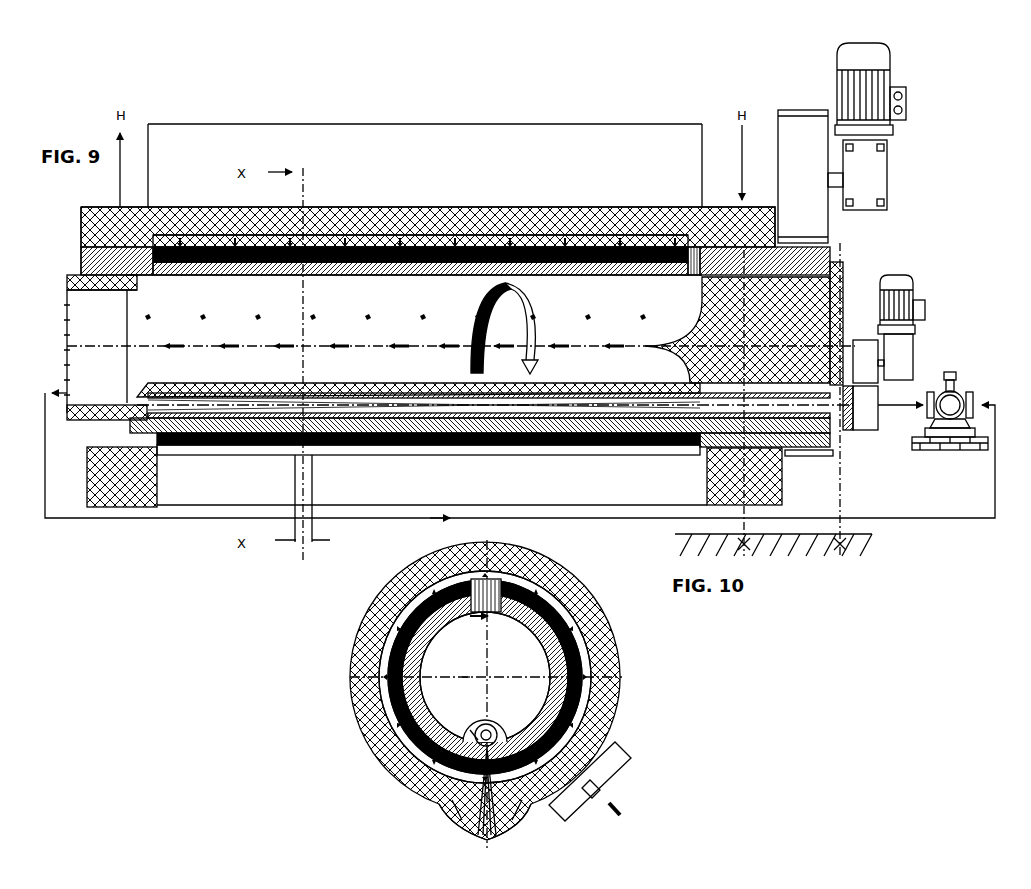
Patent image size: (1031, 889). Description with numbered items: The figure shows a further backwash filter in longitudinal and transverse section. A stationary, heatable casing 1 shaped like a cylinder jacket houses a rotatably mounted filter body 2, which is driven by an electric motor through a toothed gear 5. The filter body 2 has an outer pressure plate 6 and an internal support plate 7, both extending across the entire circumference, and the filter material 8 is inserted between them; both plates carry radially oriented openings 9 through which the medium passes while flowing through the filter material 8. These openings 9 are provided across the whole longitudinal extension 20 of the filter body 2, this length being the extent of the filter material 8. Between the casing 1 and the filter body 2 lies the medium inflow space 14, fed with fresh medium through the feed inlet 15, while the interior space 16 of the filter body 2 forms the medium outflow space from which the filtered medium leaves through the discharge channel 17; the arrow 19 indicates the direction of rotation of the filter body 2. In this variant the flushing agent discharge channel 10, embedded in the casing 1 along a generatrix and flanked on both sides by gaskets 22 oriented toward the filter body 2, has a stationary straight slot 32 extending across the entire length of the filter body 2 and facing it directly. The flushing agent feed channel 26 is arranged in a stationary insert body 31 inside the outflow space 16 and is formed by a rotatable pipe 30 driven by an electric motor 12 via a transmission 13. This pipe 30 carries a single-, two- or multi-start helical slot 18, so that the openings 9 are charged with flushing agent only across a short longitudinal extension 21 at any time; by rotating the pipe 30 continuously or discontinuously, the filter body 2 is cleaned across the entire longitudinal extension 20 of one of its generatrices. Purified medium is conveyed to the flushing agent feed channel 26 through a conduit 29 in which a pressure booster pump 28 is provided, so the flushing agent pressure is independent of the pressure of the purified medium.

In FIG. 9, the casing 1 is at (643, 207).
In FIG. 10, the casing 1 is at (603, 713).
In FIG. 9, the filter body 2 is at (85, 232).
In FIG. 10, the filter body 2 is at (585, 666).
In FIG. 9, the toothed gear 5 is at (866, 183).
In FIG. 9, the pressure plate 6 is at (590, 250).
In FIG. 10, the pressure plate 6 is at (585, 687).
In FIG. 9, the support plate 7 is at (523, 252).
In FIG. 10, the support plate 7 is at (573, 733).
In FIG. 9, the filter material 8 is at (487, 250).
In FIG. 10, the filter material 8 is at (393, 706).
In FIG. 9, the openings 9 is at (688, 247).
In FIG. 10, the openings 9 is at (512, 578).
In FIG. 9, the flushing agent discharge channel 10 is at (247, 482).
In FIG. 10, the flushing agent discharge channel 10 is at (472, 813).
In FIG. 9, the electric motor 12 is at (905, 280).
In FIG. 9, the transmission 13 is at (903, 365).
In FIG. 9, the medium inflow space 14 is at (378, 210).
In FIG. 10, the medium inflow space 14 is at (372, 665).
In FIG. 10, the feed inlet 15 is at (603, 783).
In FIG. 9, the interior space 16 is at (364, 350).
In FIG. 10, the interior space 16 is at (462, 686).
In FIG. 9, the discharge channel 17 is at (85, 333).
In FIG. 9, the slot 18 is at (438, 402).
In FIG. 10, the slot 18 is at (500, 724).
In FIG. 9, the arrow 19 is at (536, 356).
In FIG. 10, the arrow 19 is at (478, 620).
In FIG. 9, the longitudinal extension 20 is at (425, 157).
In FIG. 9, the short longitudinal extension 21 is at (343, 537).
In FIG. 10, the gaskets 22 is at (450, 807).
In FIG. 9, the flushing agent feed channel 26 is at (595, 407).
In FIG. 10, the flushing agent feed channel 26 is at (495, 718).
In FIG. 9, the pressure booster pump 28 is at (960, 390).
In FIG. 9, the conduit 29 is at (620, 520).
In FIG. 9, the rotatable pipe 30 is at (405, 398).
In FIG. 10, the rotatable pipe 30 is at (474, 724).
In FIG. 9, the insert body 31 is at (822, 303).
In FIG. 10, the insert body 31 is at (480, 718).
In FIG. 9, the straight slot 32 is at (397, 455).
In FIG. 10, the straight slot 32 is at (507, 810).